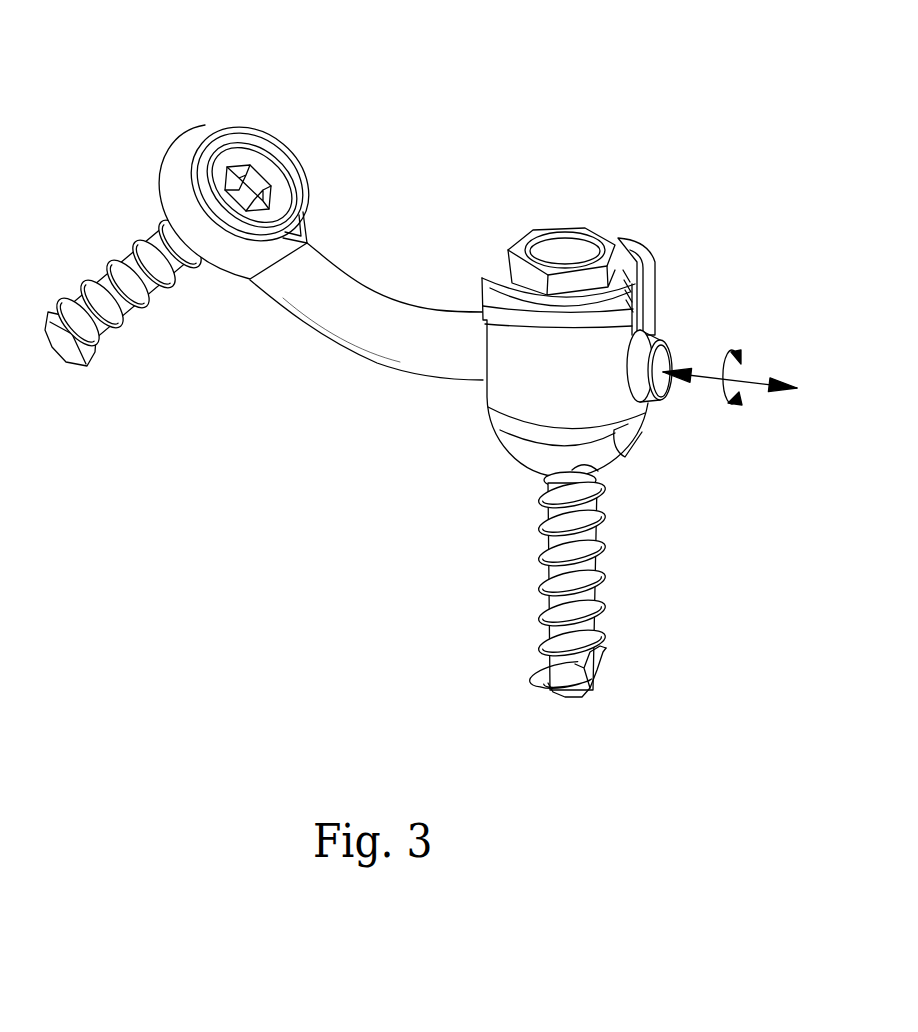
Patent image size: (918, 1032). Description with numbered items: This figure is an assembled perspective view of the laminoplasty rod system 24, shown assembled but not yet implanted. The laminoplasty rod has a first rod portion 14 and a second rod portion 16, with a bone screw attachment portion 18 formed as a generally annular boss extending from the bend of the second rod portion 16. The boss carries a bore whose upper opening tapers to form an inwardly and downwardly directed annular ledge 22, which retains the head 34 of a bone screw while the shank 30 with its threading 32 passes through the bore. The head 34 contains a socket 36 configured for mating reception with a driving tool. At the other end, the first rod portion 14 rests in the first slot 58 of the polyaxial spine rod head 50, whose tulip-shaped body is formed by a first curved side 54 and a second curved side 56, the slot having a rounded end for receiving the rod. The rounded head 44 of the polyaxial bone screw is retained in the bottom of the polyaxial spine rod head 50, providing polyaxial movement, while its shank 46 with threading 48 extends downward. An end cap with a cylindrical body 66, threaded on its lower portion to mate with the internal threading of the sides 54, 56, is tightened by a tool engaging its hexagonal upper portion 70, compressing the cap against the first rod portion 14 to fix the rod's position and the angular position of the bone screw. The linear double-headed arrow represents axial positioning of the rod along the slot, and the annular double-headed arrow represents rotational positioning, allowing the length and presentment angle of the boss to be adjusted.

The first rod portion 14 is at (366, 334).
The second rod portion 16 is at (366, 320).
The bone screw attachment portion 18 is at (246, 173).
The ledge 22 is at (249, 166).
The laminoplasty rod system 24 is at (505, 79).
The shank 30 is at (127, 305).
The threading 32 is at (98, 354).
The head 34 is at (293, 189).
The socket 36 is at (255, 176).
The rounded head 44 is at (580, 579).
The shank 46 is at (580, 581).
The threading 48 is at (603, 585).
The polyaxial spine rod head 50 is at (607, 351).
The first curved side 54 is at (650, 265).
The second curved side 56 is at (549, 377).
The first slot 58 is at (673, 346).
The cylindrical body 66 is at (666, 266).
The hexagonal upper portion 70 is at (573, 243).